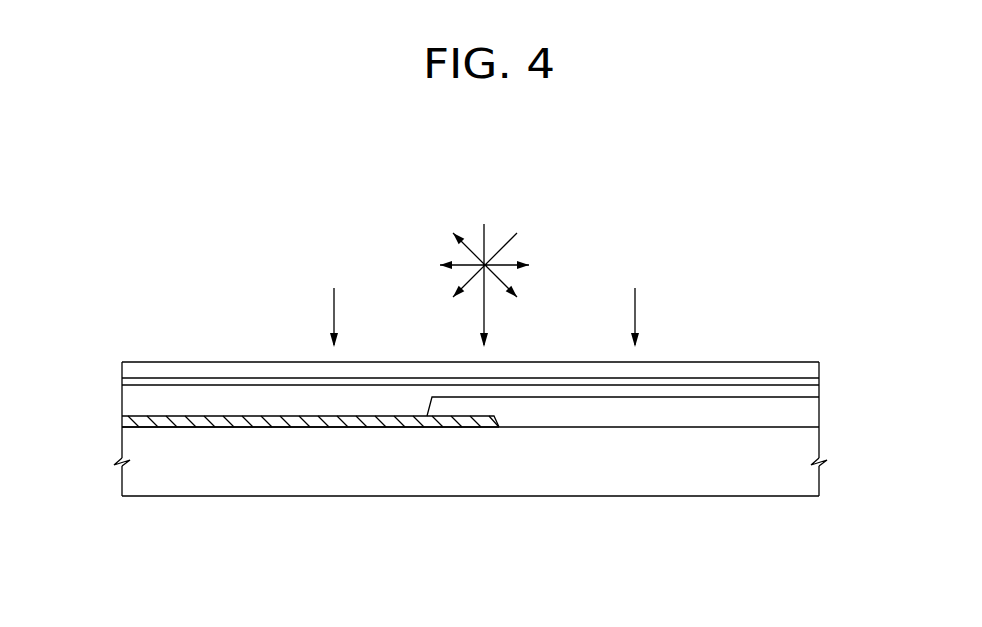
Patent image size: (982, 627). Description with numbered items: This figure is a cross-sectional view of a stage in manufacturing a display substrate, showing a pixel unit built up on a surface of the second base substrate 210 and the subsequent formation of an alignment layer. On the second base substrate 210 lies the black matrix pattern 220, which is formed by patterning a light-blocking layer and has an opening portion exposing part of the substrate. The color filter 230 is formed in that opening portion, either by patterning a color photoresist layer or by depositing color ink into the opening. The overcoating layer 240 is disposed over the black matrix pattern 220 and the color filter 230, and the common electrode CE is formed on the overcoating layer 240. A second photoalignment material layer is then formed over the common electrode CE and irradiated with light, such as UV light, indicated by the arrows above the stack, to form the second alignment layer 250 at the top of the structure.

The second base substrate 210 is at (265, 462).
The black matrix pattern 220 is at (365, 419).
The color filter 230 is at (478, 407).
The overcoating layer 240 is at (548, 389).
The common electrode CE is at (615, 380).
The second alignment layer 250 is at (683, 368).